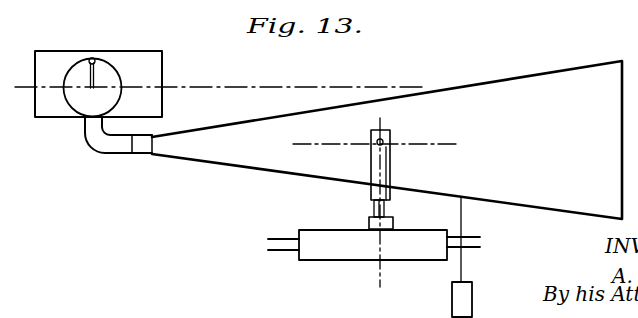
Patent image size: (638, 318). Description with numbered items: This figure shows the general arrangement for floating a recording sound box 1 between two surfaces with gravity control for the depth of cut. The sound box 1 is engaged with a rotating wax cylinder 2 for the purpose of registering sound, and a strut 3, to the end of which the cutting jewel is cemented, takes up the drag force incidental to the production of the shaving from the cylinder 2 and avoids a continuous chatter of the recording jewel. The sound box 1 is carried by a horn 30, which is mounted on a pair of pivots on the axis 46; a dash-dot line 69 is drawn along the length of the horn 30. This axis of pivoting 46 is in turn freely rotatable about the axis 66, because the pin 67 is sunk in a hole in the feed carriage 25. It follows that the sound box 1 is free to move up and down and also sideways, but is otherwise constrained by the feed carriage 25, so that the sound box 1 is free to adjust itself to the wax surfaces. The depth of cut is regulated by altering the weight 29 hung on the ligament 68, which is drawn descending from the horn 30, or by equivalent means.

The recording sound box 1 is at (118, 70).
The rotating wax cylinder 2 is at (57, 103).
The strut 3 is at (82, 72).
The horn 30 is at (527, 82).
The horn axis line 69 is at (335, 83).
The axis of pivoting 46 is at (377, 145).
The pin 67 is at (374, 212).
The axis 66 is at (376, 269).
The feed carriage 25 is at (418, 246).
The ligament 68 is at (462, 267).
The weight 29 is at (462, 304).